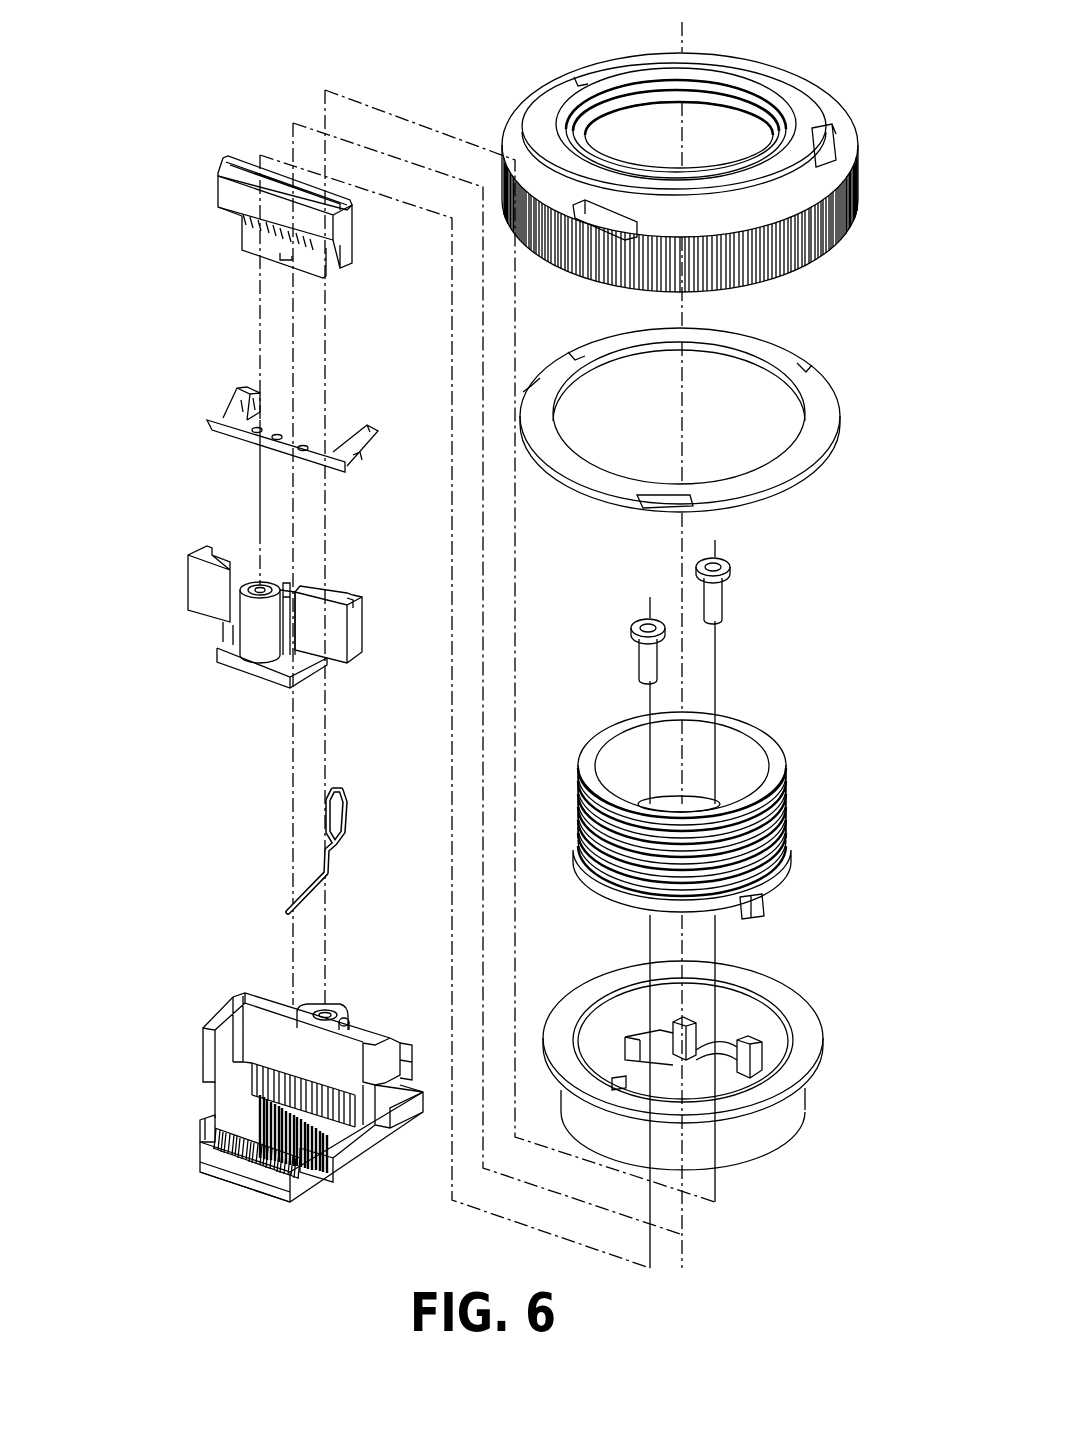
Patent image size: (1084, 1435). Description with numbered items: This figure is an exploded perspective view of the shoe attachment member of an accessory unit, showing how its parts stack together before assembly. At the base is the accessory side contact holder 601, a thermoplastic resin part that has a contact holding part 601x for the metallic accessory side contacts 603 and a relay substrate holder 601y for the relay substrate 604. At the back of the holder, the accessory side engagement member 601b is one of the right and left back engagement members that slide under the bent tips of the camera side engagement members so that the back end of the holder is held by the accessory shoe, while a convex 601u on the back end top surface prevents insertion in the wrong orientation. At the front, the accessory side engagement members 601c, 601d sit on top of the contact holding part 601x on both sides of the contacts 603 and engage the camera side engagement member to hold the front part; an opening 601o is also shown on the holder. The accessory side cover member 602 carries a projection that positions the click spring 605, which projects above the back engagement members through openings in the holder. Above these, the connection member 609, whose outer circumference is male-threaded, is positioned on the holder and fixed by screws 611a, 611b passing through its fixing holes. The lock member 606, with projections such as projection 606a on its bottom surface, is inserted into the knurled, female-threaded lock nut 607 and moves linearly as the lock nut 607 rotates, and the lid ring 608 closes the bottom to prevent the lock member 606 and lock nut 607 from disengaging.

The accessory side contact holder 601 is at (281, 1086).
The accessory side engagement member 601b is at (392, 1123).
The accessory side engagement member 601c is at (218, 1122).
The accessory side engagement member 601d is at (318, 1160).
The housing opening 601o is at (303, 1150).
The convex 601u is at (406, 1072).
The contact holding part 601x is at (270, 1162).
The relay substrate holder 601y is at (337, 1052).
The accessory side cover member 602 is at (218, 600).
The contact 603 is at (343, 825).
The relay substrate 604 is at (222, 222).
The click spring 605 is at (217, 417).
The lock member 606 is at (712, 1035).
The projection 606a is at (612, 1058).
The lock nut 607 is at (793, 78).
The lid ring 608 is at (790, 358).
The connection member 609 is at (778, 853).
The screw 611a is at (718, 598).
The screw 611b is at (657, 662).